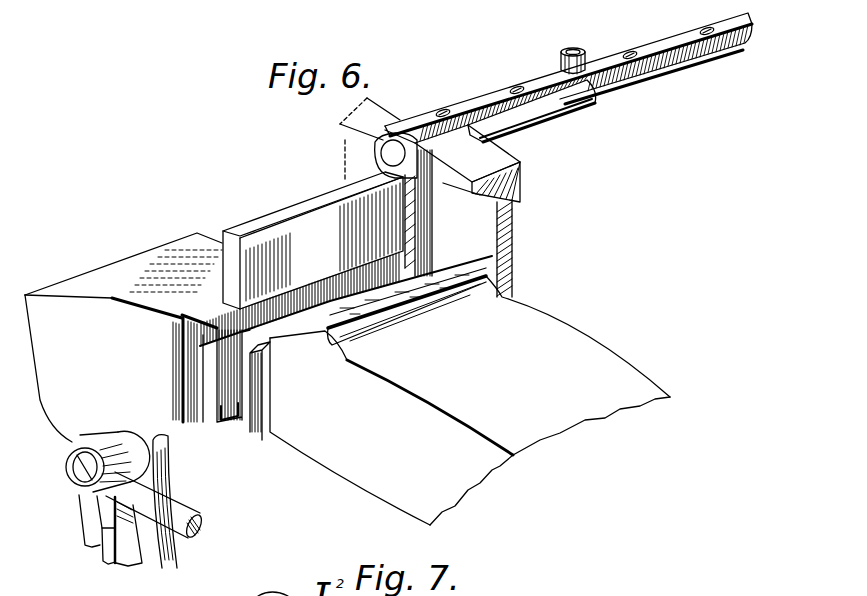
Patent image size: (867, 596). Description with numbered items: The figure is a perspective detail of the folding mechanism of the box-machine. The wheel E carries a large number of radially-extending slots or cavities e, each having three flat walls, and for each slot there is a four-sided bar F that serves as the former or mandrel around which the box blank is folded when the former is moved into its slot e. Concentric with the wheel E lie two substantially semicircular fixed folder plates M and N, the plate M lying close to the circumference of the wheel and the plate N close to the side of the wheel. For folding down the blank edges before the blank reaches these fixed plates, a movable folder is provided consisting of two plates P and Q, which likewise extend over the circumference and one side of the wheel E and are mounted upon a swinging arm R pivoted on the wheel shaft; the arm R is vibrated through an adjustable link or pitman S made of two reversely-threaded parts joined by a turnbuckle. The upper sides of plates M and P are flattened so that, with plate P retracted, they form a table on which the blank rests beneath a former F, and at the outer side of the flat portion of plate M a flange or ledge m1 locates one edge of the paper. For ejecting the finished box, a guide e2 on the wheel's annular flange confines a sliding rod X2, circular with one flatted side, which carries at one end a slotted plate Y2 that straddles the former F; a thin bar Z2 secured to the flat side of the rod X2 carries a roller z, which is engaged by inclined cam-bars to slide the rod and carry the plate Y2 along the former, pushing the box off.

The folder plate P is at (147, 262).
The folder plate Q is at (104, 368).
The former F is at (346, 259).
The plate Y2 is at (420, 231).
The wheel E is at (513, 280).
The slot e is at (228, 418).
The link S is at (187, 513).
The swinging arm R is at (140, 557).
The flange m1 is at (455, 285).
The fixed folder plate M is at (574, 365).
The fixed folder plate N is at (391, 428).
The roller z is at (560, 56).
The thin bar Z2 is at (660, 40).
The sliding rod X2 is at (648, 85).
The guide e2 is at (597, 113).